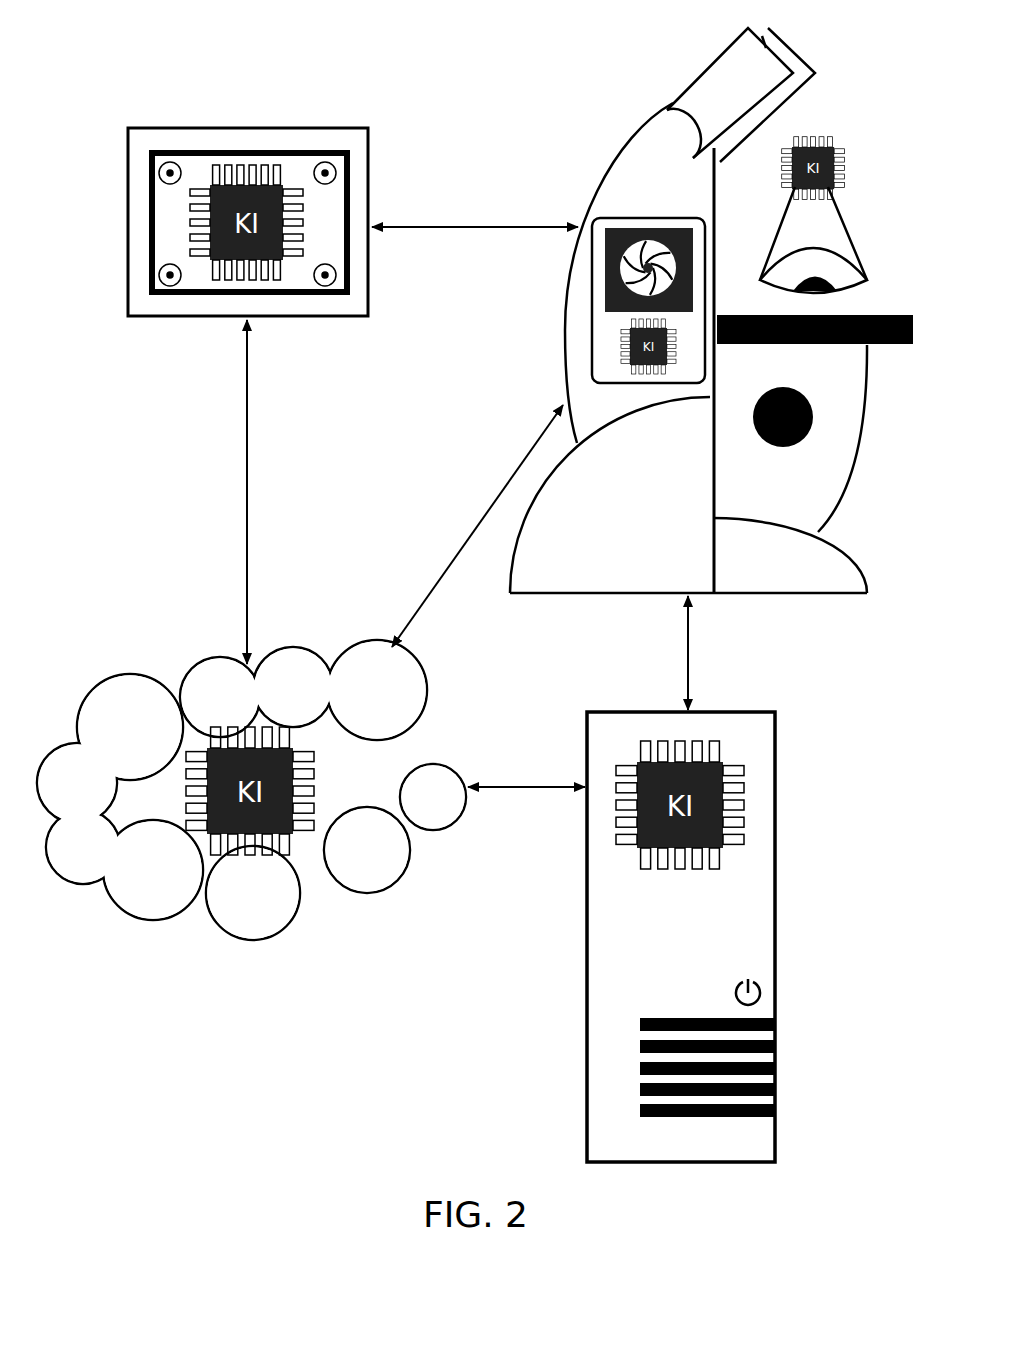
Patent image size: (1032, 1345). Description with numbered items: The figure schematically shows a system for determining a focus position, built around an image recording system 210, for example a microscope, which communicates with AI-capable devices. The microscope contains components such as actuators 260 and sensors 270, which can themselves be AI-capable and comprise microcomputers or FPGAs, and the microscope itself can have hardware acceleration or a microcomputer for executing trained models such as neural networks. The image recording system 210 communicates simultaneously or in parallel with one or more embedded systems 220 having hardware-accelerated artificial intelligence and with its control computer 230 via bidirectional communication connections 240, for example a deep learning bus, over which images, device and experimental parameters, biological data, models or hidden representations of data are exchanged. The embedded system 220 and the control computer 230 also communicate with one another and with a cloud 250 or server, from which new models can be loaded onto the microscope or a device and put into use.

The image recording system 210 is at (782, 597).
The embedded system 220 is at (272, 128).
The control computer 230 is at (587, 1033).
The bidirectional communication connections 240 is at (495, 230).
The cloud 250 is at (337, 907).
The actuators 260 is at (630, 218).
The sensors 270 is at (830, 140).